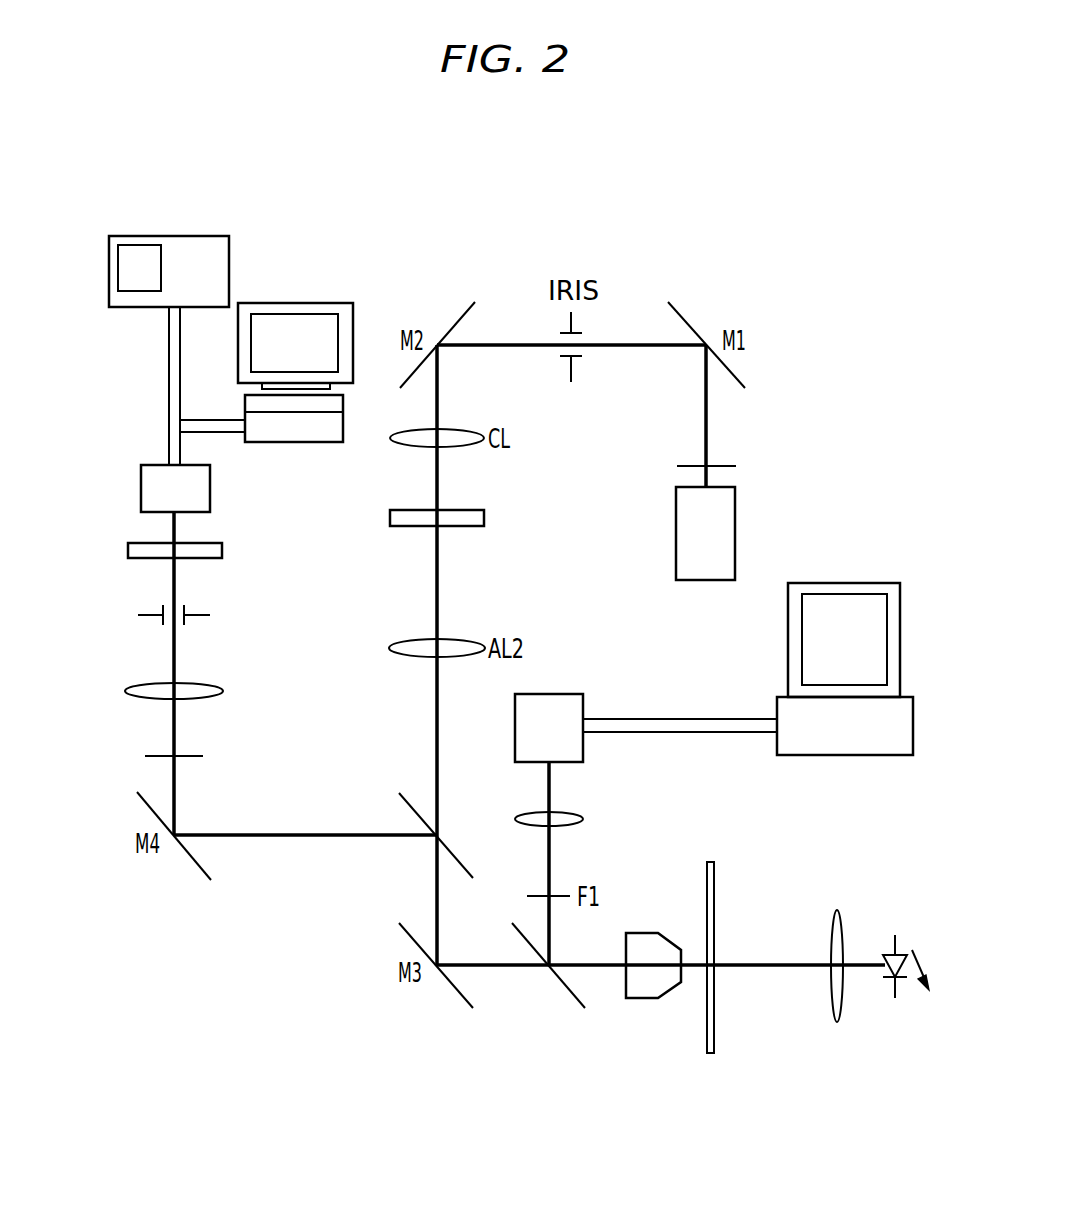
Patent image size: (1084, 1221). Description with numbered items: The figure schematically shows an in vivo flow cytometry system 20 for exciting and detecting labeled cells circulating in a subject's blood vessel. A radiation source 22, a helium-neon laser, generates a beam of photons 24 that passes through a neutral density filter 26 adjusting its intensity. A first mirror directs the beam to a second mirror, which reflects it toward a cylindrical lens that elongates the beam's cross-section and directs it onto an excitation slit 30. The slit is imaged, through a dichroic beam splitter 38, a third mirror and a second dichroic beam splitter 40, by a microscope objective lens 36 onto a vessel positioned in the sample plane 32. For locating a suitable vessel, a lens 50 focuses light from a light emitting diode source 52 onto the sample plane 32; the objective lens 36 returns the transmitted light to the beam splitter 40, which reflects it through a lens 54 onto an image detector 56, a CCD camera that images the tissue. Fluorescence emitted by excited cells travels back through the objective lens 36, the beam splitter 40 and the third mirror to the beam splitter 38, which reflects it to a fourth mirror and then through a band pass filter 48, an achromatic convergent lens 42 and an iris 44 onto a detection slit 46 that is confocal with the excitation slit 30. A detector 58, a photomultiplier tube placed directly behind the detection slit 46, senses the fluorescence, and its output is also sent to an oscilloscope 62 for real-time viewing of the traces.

The system 20 is at (383, 204).
The radiation source 22 is at (735, 538).
The beam of photons 24 is at (706, 422).
The neutral density filter 26 is at (690, 465).
The slit 30 is at (484, 518).
The sample plane 32 is at (714, 1036).
The microscope objective lens 36 is at (640, 933).
The dichroic beam splitter 38 is at (455, 855).
The dichroic beam splitter 40 is at (525, 942).
The achromatic convergent lens 42 is at (150, 688).
The iris 44 is at (160, 614).
The detection slit 46 is at (128, 548).
The band pass filter 48 is at (158, 755).
The lens 50 is at (841, 1003).
The source 52 is at (903, 948).
The lens 54 is at (570, 812).
The image detector 56 is at (558, 694).
The detector 58 is at (141, 488).
The oscilloscope 62 is at (110, 270).